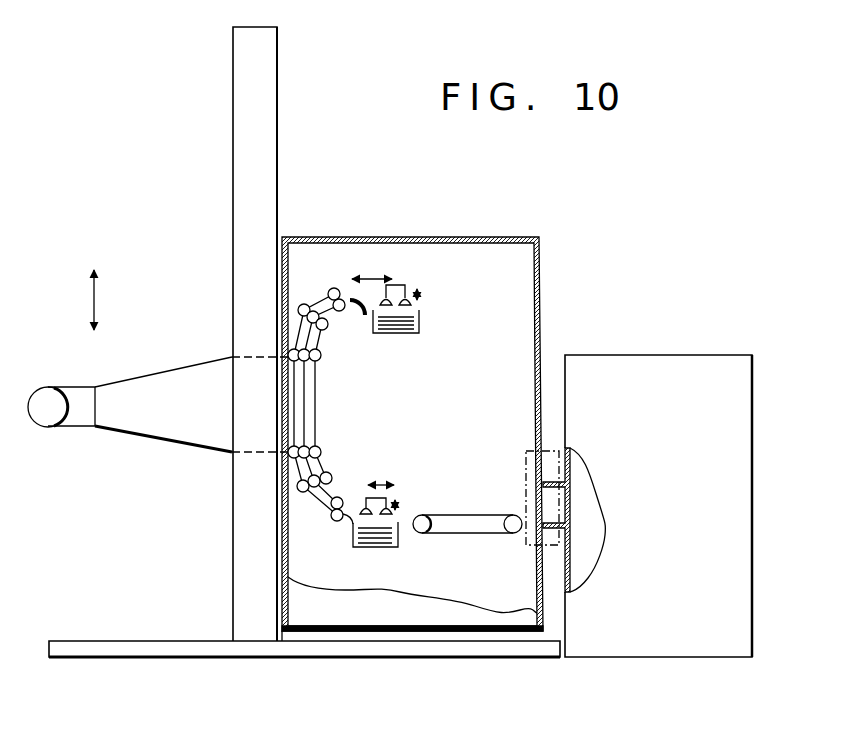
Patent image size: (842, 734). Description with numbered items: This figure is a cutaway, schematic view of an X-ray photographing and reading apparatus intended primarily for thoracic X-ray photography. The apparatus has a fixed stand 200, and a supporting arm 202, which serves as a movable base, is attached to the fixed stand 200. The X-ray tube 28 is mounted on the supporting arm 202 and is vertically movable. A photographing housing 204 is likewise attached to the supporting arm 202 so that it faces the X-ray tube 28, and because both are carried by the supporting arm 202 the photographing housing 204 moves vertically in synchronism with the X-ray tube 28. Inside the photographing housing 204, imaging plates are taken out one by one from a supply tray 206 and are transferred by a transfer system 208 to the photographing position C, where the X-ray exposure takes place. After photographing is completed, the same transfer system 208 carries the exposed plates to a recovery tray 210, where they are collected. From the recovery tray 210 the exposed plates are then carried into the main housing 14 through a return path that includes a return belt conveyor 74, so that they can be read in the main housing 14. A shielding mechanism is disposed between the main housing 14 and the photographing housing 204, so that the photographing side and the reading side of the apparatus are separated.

The fixed stand 200 is at (270, 117).
The supporting arm 202 is at (150, 382).
The X-ray tube 28 is at (50, 395).
The photographing housing 204 is at (440, 237).
The supply tray 206 is at (420, 318).
The transfer system 208 is at (315, 393).
The photographing position C is at (304, 421).
The recovery tray 210 is at (355, 548).
The first return belt conveyor 74 is at (468, 540).
The main housing 14 is at (640, 355).